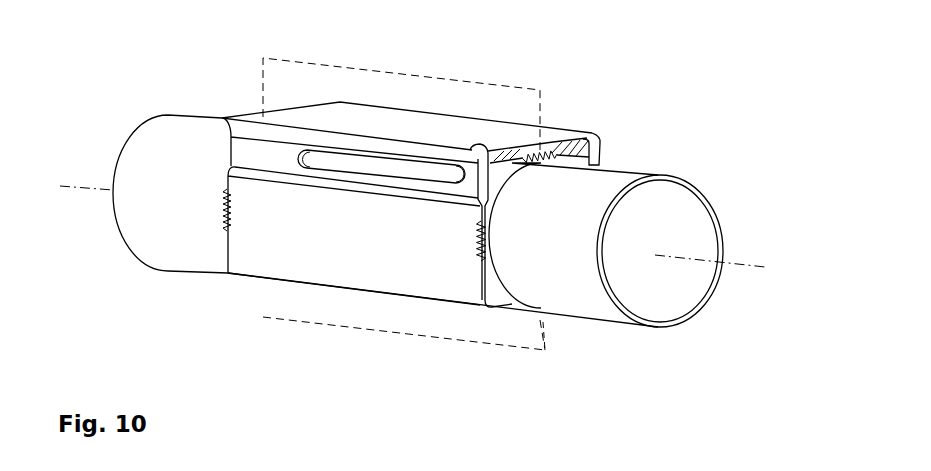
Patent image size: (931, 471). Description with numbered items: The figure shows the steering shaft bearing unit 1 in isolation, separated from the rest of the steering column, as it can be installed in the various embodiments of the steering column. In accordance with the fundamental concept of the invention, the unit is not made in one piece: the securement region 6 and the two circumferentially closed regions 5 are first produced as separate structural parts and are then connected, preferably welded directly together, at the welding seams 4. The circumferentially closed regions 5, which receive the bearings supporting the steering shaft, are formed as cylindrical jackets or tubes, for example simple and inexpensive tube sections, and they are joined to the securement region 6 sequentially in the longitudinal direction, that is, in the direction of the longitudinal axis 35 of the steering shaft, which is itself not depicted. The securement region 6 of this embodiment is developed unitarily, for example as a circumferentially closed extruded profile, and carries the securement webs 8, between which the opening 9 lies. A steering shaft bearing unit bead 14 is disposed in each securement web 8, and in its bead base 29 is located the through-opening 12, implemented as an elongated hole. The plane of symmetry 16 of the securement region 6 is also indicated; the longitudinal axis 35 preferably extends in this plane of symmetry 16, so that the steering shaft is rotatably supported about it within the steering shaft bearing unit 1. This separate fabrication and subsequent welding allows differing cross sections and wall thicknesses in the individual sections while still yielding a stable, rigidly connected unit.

The steering shaft bearing unit 1 is at (570, 102).
The welding seams 4 is at (393, 206).
The circumferentially closed region 5 is at (600, 177).
The securement region 6 is at (354, 279).
The securement webs 8 is at (343, 257).
The opening 9 is at (596, 137).
The through-opening 12 is at (340, 280).
The steering shaft bearing unit bead 14 is at (598, 155).
The plane of symmetry 16 is at (523, 330).
The bead base 29 is at (467, 178).
The longitudinal axis 35 is at (680, 258).